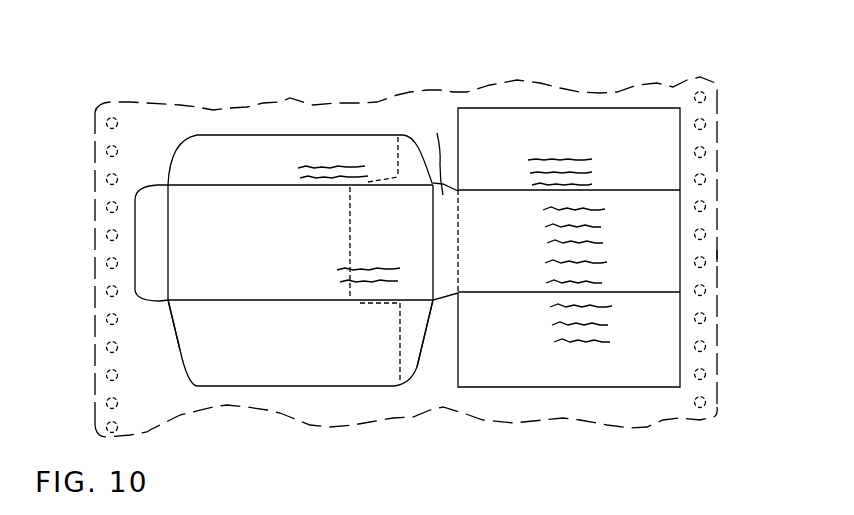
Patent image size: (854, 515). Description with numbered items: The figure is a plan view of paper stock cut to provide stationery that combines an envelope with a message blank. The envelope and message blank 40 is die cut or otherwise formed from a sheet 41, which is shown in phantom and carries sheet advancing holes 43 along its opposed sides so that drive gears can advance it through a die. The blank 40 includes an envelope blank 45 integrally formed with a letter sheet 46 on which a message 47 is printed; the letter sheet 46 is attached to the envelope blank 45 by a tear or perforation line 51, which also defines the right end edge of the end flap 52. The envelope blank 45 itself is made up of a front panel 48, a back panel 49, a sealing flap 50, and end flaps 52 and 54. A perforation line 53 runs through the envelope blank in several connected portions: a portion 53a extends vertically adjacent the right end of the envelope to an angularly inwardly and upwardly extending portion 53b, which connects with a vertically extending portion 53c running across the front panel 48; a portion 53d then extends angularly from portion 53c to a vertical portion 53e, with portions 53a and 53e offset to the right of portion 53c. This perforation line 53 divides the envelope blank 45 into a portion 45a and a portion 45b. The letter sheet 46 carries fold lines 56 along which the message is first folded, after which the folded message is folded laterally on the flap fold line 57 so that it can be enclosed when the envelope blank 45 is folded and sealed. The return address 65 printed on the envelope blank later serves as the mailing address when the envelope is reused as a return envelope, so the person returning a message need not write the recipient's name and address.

The envelope and message blank 40 is at (583, 75).
The sheet 41 is at (717, 256).
The sheet advancing holes 43 is at (110, 238).
The envelope blank 45 is at (176, 356).
The portion of envelope blank 45a is at (424, 364).
The portion of envelope blank 45b is at (195, 383).
The letter sheet 46 is at (592, 392).
The message 47 is at (596, 303).
The front panel 48 is at (255, 255).
The back panel 49 is at (290, 349).
The sealing flap 50 is at (255, 174).
The perforation line 51 is at (460, 233).
The end flap 52 is at (434, 154).
The perforation line 53 is at (346, 215).
The perforation portion 53a is at (398, 333).
The perforation portion 53b is at (377, 304).
The perforation portion 53c is at (348, 231).
The perforation portion 53d is at (387, 185).
The perforation portion 53e is at (402, 143).
The end flap 54 is at (153, 198).
The fold lines 56 is at (648, 292).
The flap fold line 57 is at (430, 227).
The return address 65 is at (313, 145).